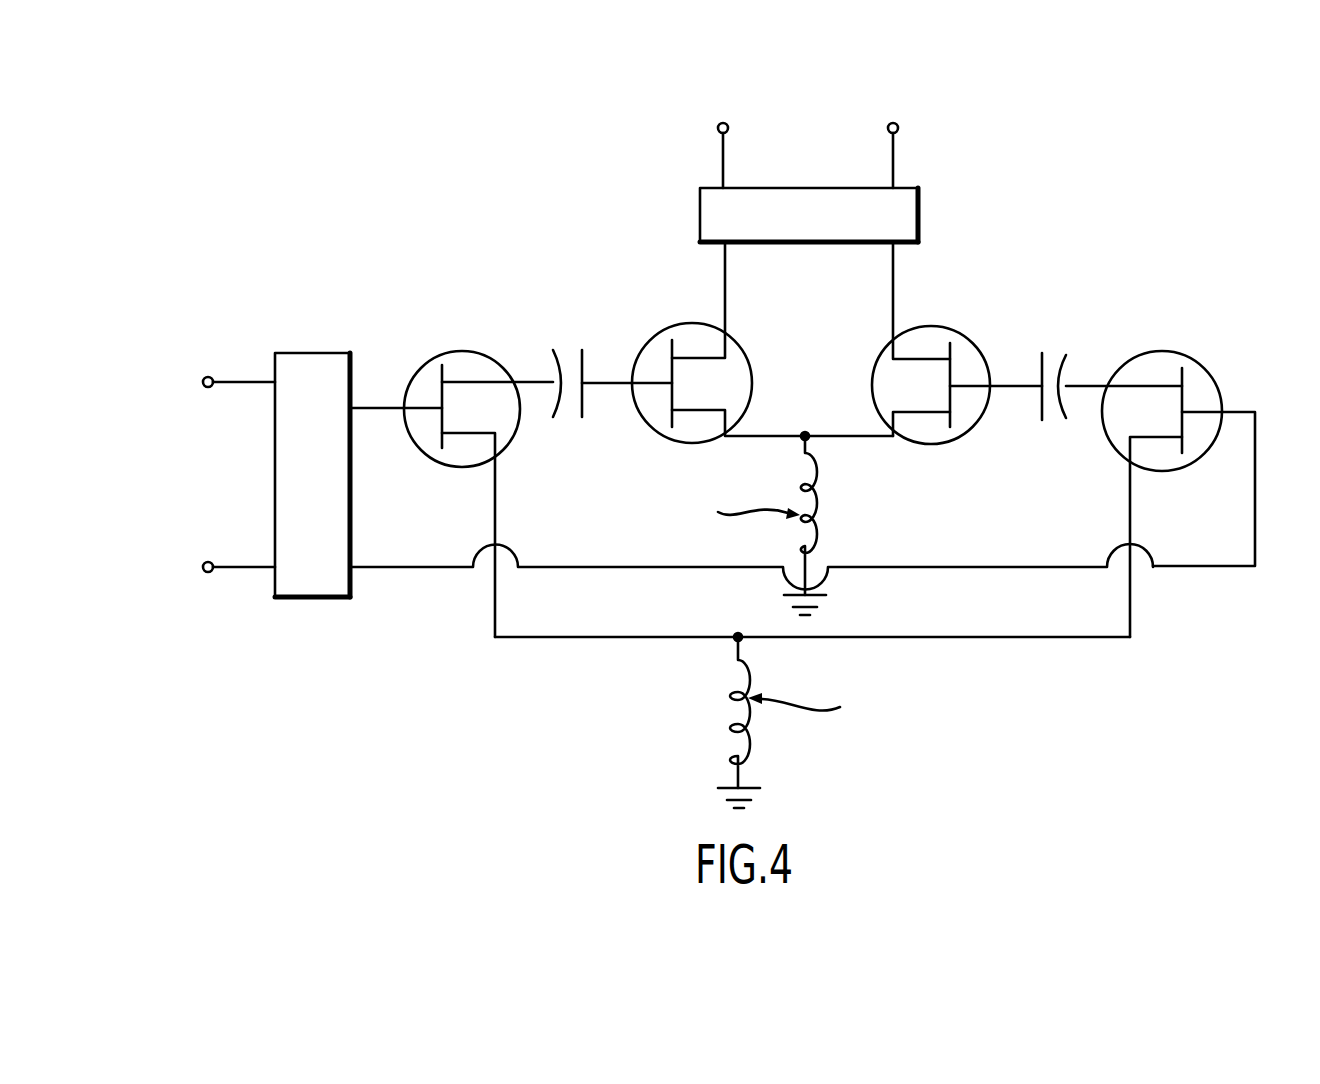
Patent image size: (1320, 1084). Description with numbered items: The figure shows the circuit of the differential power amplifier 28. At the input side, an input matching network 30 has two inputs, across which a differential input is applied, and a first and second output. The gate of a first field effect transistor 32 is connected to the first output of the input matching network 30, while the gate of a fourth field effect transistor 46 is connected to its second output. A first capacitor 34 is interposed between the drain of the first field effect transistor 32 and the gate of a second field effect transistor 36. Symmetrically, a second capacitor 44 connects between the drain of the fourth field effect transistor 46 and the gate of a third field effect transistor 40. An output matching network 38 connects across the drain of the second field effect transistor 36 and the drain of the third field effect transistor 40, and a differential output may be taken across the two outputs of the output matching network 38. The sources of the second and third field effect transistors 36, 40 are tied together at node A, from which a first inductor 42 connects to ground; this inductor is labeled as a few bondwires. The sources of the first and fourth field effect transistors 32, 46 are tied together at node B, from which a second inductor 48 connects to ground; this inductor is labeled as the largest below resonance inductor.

The differential power amplifier 28 is at (231, 280).
The input matching network 30 is at (310, 597).
The first field effect transistor 32 is at (462, 350).
The first capacitor 34 is at (570, 348).
The second field effect transistor 36 is at (658, 333).
The output matching network 38 is at (700, 210).
The third field effect transistor 40 is at (958, 330).
The first inductor 42 is at (828, 515).
The second capacitor 44 is at (1050, 352).
The fourth field effect transistor 46 is at (1197, 365).
The second inductor 48 is at (750, 740).